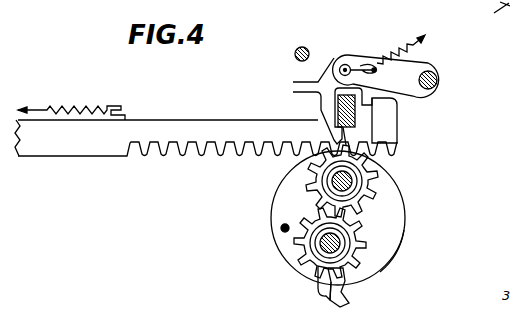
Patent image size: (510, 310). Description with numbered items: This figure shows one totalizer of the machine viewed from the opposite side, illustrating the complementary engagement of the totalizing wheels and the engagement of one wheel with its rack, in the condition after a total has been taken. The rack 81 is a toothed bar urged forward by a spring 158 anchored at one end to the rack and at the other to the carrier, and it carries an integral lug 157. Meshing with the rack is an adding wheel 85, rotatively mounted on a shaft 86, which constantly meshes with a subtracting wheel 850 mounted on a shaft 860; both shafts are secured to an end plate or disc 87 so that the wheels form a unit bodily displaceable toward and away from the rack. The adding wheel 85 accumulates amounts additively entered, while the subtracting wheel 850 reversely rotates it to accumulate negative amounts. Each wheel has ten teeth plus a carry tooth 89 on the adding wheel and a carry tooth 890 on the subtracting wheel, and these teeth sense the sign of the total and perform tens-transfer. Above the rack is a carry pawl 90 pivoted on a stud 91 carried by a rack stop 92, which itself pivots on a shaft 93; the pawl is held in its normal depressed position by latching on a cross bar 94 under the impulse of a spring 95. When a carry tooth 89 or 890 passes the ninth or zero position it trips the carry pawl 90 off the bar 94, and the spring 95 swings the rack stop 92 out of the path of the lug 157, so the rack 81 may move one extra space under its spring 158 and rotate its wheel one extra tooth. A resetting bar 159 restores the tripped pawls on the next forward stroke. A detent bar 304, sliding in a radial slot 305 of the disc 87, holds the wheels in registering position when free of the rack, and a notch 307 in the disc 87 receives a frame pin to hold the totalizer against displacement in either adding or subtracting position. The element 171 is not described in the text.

The rack 81 is at (176, 121).
The spring 158 is at (82, 109).
The resetting bar 159 is at (312, 48).
The carry pawl 90 is at (321, 106).
The stud 91 is at (360, 52).
The rack stop 92 is at (404, 99).
The shaft 93 is at (446, 80).
The cross bar 94 is at (356, 121).
The spring 95 is at (420, 44).
The lug 157 is at (386, 112).
The carry tooth 89 is at (320, 157).
The adding wheel 85 is at (375, 183).
The shaft 86 is at (352, 178).
The end plate 87 is at (398, 255).
The subtracting wheel 850 is at (363, 232).
The shaft 860 is at (393, 250).
The radial slot 305 is at (294, 227).
The detent bar 304 is at (282, 228).
The carry tooth 890 is at (316, 271).
The notch 307 is at (344, 284).
The lever 171 is at (491, 12).